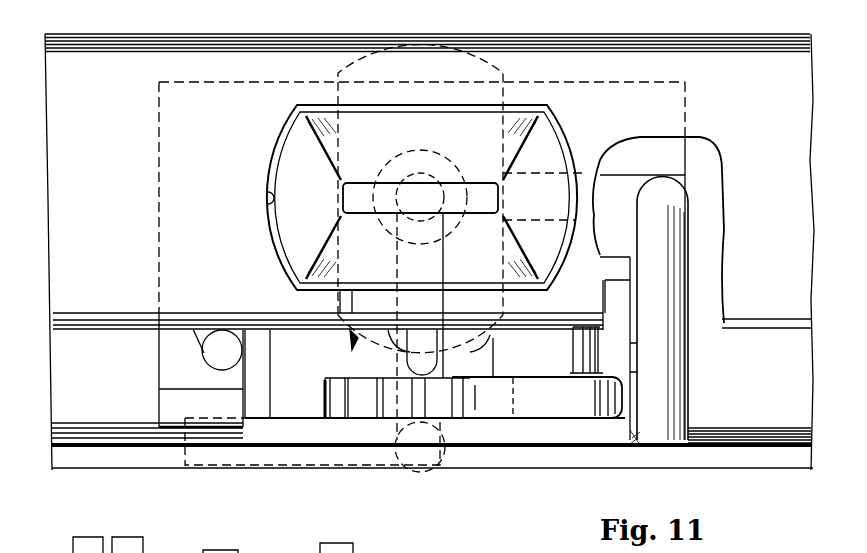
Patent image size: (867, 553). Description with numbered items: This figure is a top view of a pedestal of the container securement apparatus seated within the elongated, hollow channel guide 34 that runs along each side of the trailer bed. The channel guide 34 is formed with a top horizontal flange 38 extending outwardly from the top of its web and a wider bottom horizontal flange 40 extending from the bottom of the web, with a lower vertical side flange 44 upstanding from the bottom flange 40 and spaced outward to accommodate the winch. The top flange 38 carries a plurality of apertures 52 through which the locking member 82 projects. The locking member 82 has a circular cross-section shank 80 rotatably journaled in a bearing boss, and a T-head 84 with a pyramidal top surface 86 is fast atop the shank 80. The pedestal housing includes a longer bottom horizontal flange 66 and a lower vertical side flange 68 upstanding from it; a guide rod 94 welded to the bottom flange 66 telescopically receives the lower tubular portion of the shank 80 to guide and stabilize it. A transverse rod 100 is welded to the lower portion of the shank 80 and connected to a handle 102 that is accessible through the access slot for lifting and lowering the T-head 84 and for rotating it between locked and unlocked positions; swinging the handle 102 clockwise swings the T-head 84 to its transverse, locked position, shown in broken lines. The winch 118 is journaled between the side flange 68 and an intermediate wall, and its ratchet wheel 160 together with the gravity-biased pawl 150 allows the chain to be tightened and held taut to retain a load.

The channel guide 34 is at (74, 471).
The top horizontal flange 38 is at (118, 169).
The bottom horizontal flange 40 is at (793, 369).
The lower vertical side flange 44 is at (777, 462).
The aperture 52 is at (268, 198).
The bottom horizontal flange 66 is at (166, 362).
The lower vertical side flange 68 is at (551, 440).
The shank 80 is at (392, 160).
The locking member 82 is at (272, 243).
The T-head 84 is at (563, 145).
The pyramidal top surface 86 is at (288, 160).
The guide rod 94 is at (440, 178).
The transverse rod 100 is at (620, 180).
The handle 102 is at (686, 356).
The winch 118 is at (350, 366).
The pawl 150 is at (570, 406).
The ratchet wheel 160 is at (370, 418).